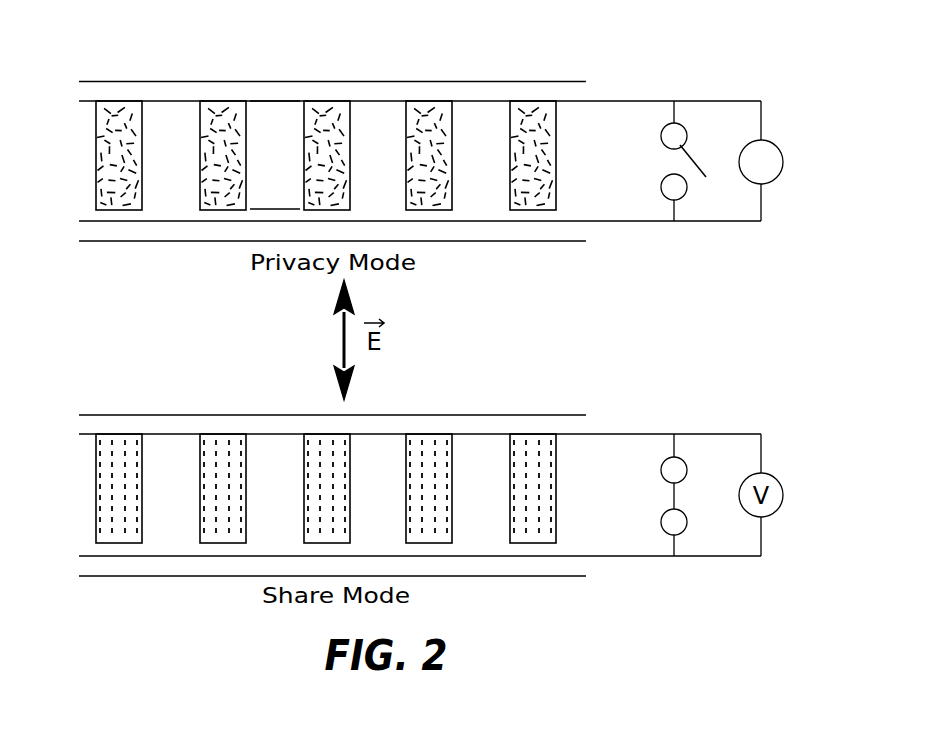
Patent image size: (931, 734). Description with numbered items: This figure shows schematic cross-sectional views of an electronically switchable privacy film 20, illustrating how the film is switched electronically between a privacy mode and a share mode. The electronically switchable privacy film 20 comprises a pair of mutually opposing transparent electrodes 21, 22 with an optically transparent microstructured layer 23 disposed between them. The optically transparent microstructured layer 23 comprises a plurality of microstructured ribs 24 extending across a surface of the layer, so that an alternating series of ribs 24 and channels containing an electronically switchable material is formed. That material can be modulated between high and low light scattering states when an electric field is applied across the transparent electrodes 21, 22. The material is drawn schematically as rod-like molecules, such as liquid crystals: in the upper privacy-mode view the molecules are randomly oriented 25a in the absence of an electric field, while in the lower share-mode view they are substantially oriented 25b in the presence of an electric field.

The electronically switchable privacy film 20 is at (550, 44).
The transparent electrode 21 is at (128, 87).
The transparent electrode 22 is at (126, 232).
The optically transparent microstructured layer 23 is at (67, 103).
The microstructured ribs 24 is at (264, 113).
The randomly oriented electronically switchable material 25a is at (428, 113).
The substantially oriented electronically switchable material 25b is at (433, 440).